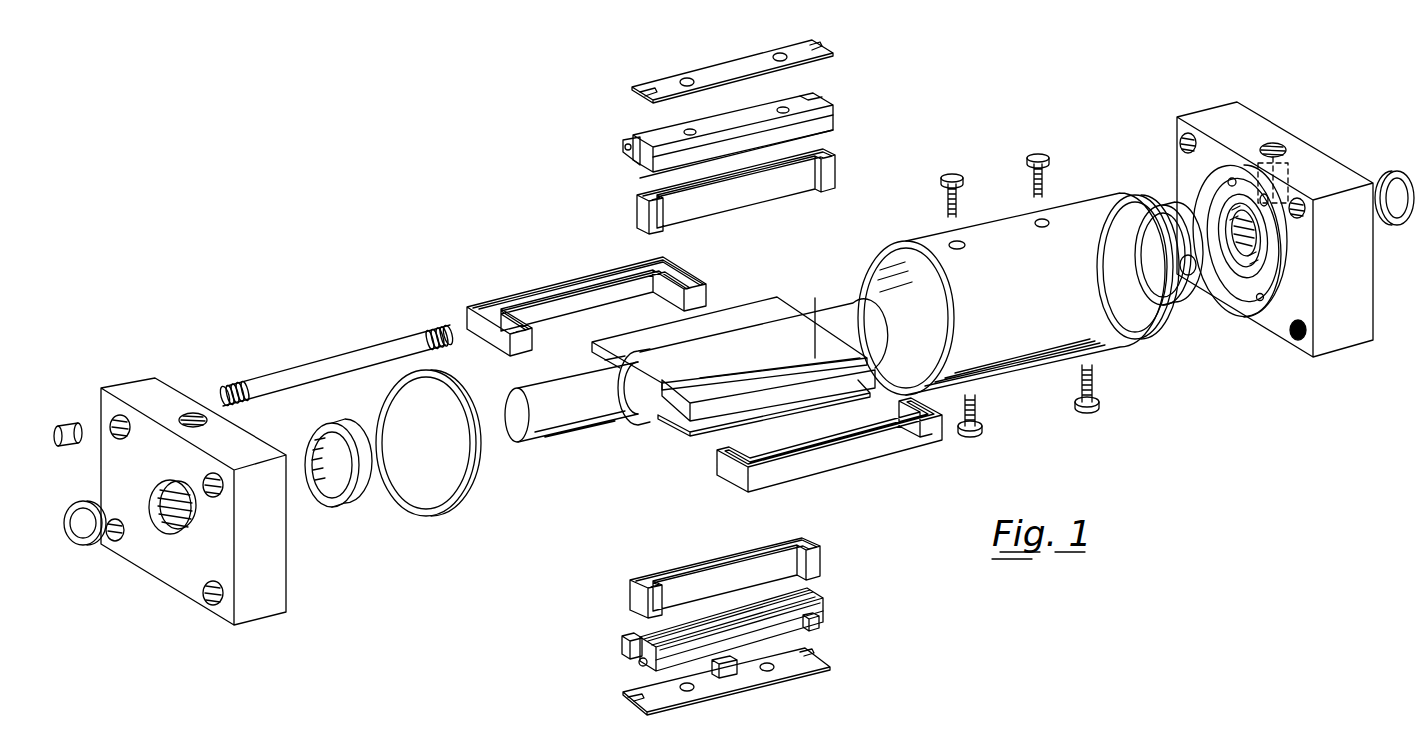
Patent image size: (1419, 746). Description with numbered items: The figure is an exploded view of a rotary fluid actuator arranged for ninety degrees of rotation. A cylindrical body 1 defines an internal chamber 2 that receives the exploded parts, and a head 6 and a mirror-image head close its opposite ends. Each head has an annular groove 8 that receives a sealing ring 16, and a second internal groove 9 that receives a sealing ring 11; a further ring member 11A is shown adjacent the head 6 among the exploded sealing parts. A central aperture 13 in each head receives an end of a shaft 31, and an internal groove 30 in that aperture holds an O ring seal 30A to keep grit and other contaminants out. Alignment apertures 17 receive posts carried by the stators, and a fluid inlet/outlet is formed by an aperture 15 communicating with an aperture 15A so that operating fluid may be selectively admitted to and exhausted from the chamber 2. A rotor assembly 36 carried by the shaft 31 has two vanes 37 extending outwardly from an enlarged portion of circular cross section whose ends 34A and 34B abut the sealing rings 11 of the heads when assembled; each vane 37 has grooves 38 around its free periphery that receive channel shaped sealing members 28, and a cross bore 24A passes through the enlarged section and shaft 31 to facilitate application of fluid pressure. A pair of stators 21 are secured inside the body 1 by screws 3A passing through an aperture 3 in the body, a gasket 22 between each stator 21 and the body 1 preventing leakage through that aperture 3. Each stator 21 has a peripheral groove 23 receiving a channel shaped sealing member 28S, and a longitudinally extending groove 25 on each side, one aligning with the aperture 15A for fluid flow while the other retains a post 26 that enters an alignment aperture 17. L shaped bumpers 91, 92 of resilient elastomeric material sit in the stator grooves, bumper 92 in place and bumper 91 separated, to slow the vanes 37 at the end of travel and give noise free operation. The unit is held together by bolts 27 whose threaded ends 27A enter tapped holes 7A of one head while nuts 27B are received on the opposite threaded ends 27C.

The cylindrical body 1 is at (1050, 280).
The internal chamber 2 is at (915, 313).
The aperture 3 is at (1045, 217).
The screws 3A is at (1045, 157).
The head 6 is at (268, 548).
The tapped holes 7A is at (121, 418).
The annular groove 8 is at (1220, 163).
The second internal groove 9 is at (1268, 273).
The sealing ring 11 is at (1163, 208).
The bushing 11A is at (333, 423).
The central aperture 13 is at (158, 517).
The fluid inlet/outlet aperture 15 is at (193, 413).
The aperture 15A is at (1263, 196).
The sealing ring 16 is at (453, 397).
The alignment apertures 17 is at (1258, 298).
The stators 21 is at (833, 128).
The gasket 22 is at (713, 72).
The peripheral groove 23 is at (647, 170).
The cross bore 24A is at (737, 380).
The longitudinally extending groove 25 is at (590, 647).
The post 26 is at (623, 147).
The bolts 27 is at (352, 360).
The threaded ends 27A is at (437, 332).
The nuts 27B is at (75, 427).
The threaded ends 27C is at (237, 380).
The channel shaped sealing members 28 is at (535, 293).
The channel shaped sealing member 28S is at (710, 565).
The internal groove 30 is at (90, 550).
The O ring seal 30A is at (1397, 177).
The shaft 31 is at (562, 416).
The end of enlarged portion 34A is at (603, 360).
The end of enlarged portion 34B is at (843, 307).
The rotor assembly 36 is at (633, 422).
The vanes 37 is at (763, 307).
The grooves 38 is at (600, 367).
The L shaped bumper 91 is at (732, 670).
The L shaped bumper 92 is at (830, 625).